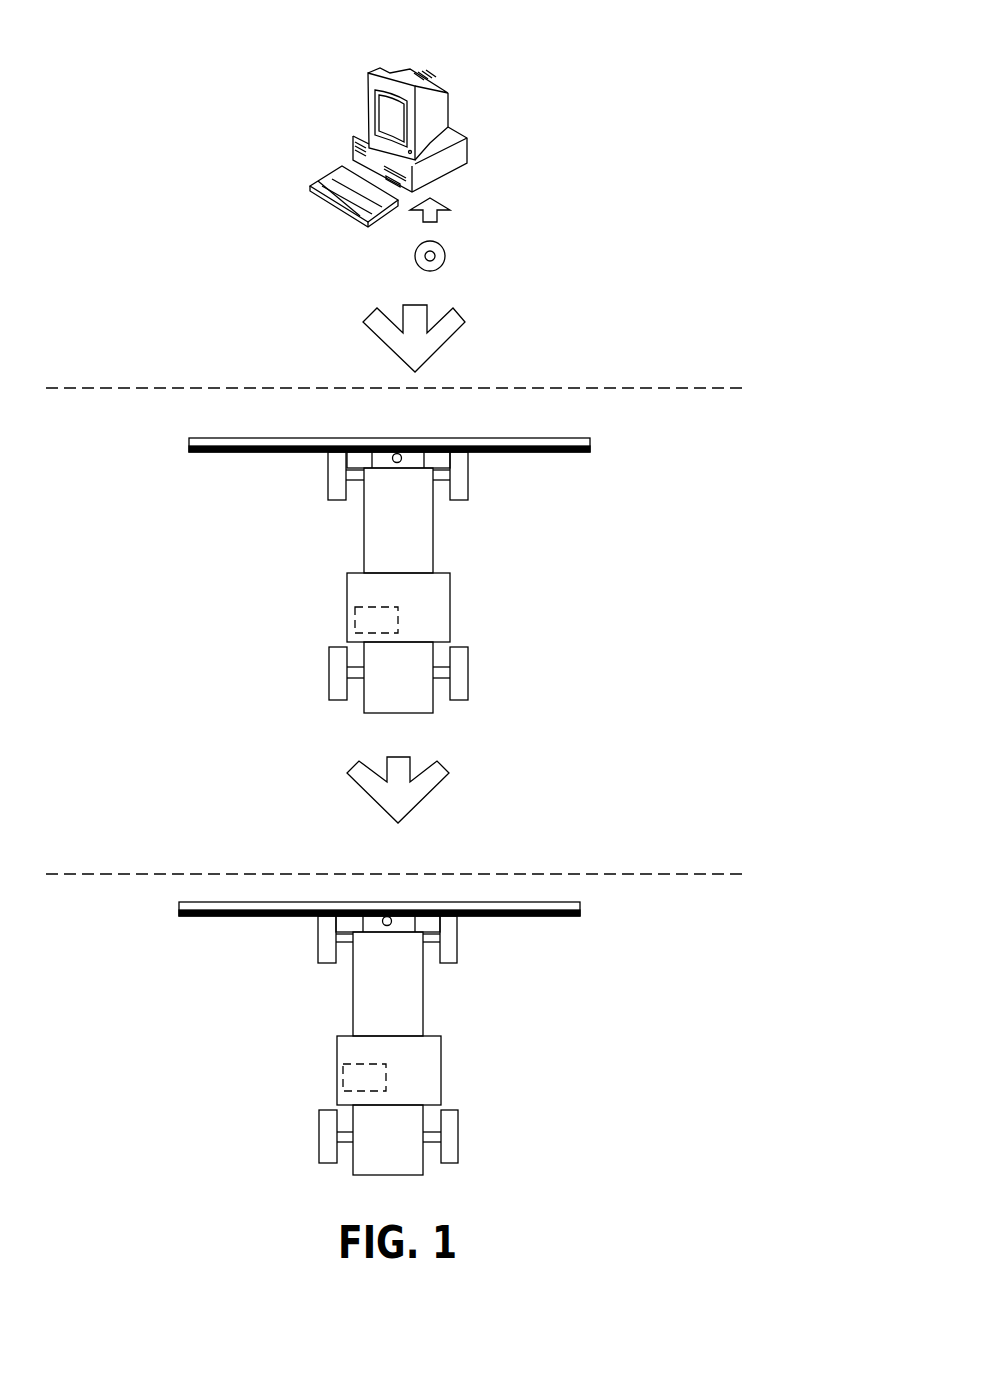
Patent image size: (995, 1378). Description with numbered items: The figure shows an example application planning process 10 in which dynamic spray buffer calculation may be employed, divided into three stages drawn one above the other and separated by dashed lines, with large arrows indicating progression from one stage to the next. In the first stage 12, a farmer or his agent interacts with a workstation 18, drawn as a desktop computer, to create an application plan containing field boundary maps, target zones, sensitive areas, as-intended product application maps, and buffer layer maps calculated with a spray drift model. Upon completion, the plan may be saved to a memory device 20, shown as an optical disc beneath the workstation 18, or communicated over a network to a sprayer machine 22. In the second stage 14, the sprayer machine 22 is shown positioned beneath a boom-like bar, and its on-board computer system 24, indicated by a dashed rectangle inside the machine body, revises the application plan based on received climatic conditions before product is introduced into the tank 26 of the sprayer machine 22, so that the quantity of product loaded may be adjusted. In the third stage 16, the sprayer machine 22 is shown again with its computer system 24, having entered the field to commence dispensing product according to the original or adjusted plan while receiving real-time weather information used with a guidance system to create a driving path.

The application planning process 10 is at (673, 113).
The first stage 12 is at (108, 343).
The second stage 14 is at (108, 844).
The third stage 16 is at (108, 946).
The workstation 18 is at (365, 95).
The memory device 20 is at (445, 256).
The sprayer machine 22 is at (452, 605).
The on-board computer system 24 is at (357, 620).
The tank 26 is at (363, 527).